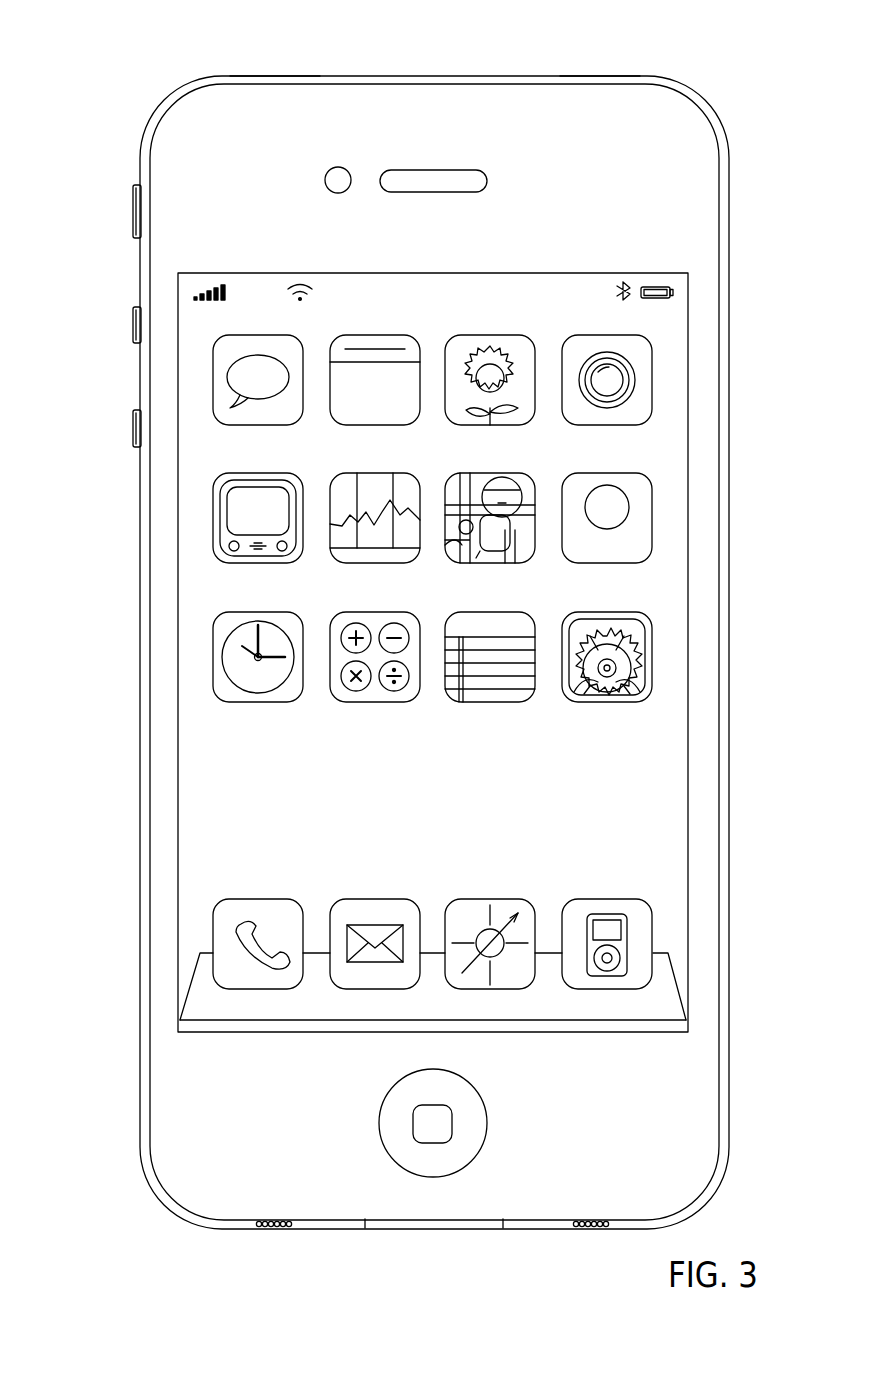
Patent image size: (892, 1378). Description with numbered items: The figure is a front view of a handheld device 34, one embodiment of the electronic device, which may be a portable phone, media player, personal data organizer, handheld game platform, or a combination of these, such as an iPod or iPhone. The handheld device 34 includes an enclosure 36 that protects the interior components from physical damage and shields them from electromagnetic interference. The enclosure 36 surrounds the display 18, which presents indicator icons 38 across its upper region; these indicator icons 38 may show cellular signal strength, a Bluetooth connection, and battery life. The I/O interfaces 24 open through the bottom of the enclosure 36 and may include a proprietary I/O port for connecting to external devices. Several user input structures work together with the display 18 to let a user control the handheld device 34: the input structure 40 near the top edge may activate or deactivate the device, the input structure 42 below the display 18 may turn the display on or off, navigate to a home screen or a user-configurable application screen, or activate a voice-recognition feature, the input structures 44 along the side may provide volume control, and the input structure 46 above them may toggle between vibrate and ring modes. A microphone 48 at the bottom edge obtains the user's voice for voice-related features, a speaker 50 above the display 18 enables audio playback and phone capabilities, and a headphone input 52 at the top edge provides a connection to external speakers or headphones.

The handheld device 34 is at (228, 40).
The enclosure 36 is at (732, 266).
The display 18 is at (690, 619).
The indicator icons 38 is at (222, 287).
The input structure 40 is at (612, 76).
The input structure 42 is at (487, 1128).
The input structures 44 is at (133, 316).
The input structure 46 is at (133, 222).
The microphone 48 is at (268, 1233).
The speaker 50 is at (450, 170).
The headphone input 52 is at (278, 76).
The I/O interfaces 24 is at (414, 1232).